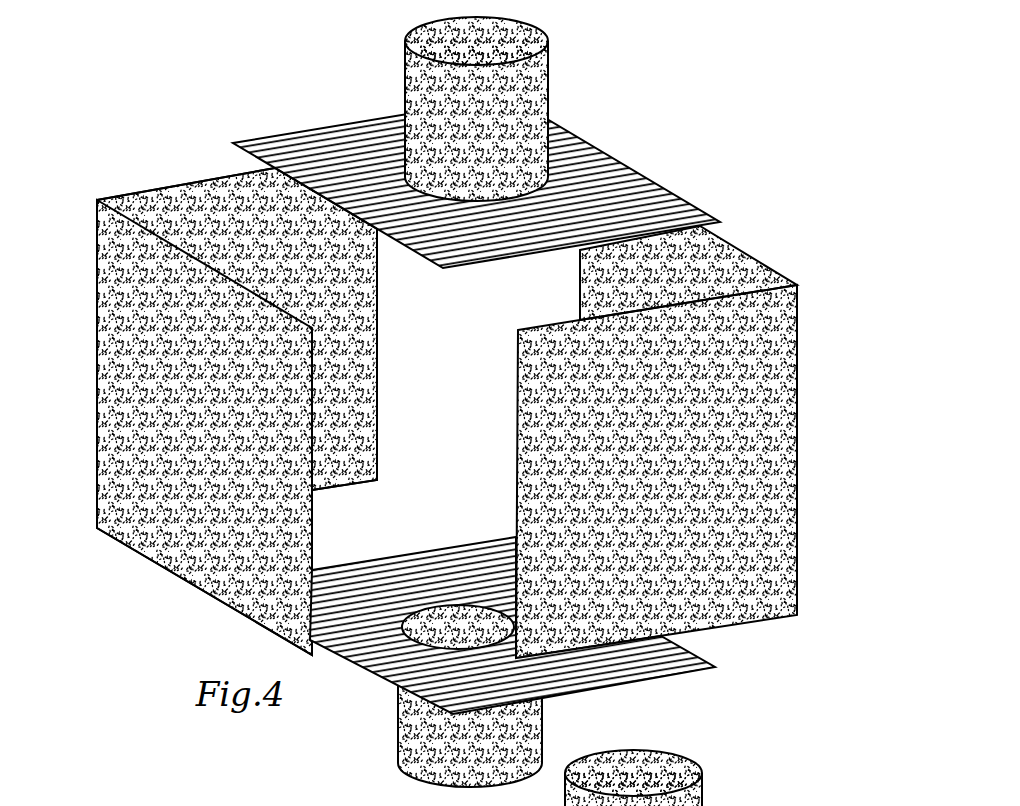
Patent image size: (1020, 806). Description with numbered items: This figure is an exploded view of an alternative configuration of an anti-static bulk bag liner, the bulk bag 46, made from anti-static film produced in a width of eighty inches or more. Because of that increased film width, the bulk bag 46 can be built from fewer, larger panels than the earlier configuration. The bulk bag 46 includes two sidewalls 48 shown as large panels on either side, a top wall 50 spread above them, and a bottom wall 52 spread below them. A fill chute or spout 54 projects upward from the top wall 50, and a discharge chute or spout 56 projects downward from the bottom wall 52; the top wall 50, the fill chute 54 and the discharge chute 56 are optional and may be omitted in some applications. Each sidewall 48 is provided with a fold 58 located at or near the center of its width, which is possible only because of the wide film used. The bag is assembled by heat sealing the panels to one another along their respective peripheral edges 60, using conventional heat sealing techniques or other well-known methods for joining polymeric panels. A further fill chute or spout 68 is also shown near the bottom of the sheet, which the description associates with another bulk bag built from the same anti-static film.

The bulk bag 46 is at (125, 191).
The sidewalls 48 is at (115, 353).
The top wall 50 is at (621, 184).
The bottom wall 52 is at (595, 692).
The fill chute 54 is at (405, 66).
The discharge chute 56 is at (398, 748).
The folds 58 is at (97, 468).
The peripheral edges 60 is at (308, 127).
The fill chute 68 is at (720, 800).